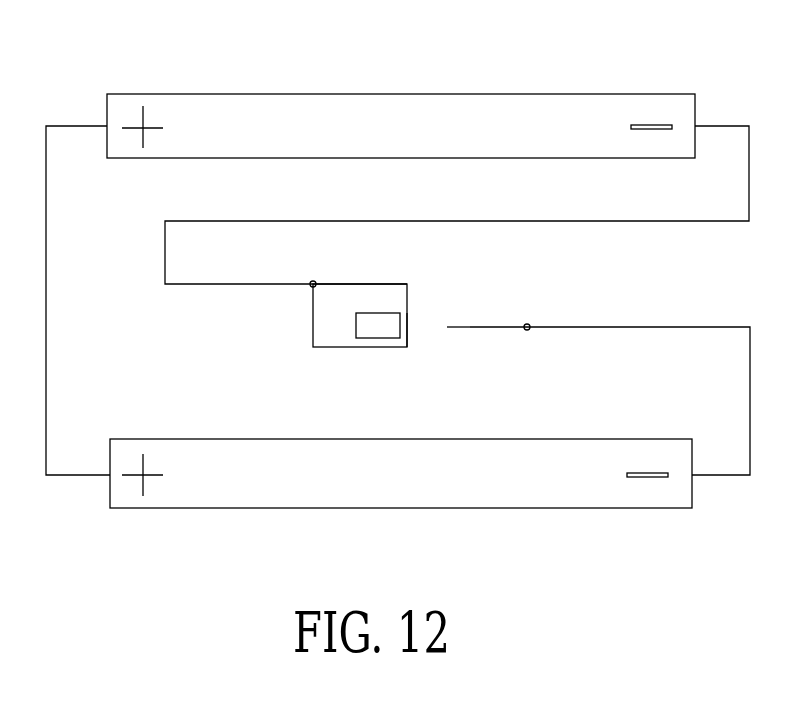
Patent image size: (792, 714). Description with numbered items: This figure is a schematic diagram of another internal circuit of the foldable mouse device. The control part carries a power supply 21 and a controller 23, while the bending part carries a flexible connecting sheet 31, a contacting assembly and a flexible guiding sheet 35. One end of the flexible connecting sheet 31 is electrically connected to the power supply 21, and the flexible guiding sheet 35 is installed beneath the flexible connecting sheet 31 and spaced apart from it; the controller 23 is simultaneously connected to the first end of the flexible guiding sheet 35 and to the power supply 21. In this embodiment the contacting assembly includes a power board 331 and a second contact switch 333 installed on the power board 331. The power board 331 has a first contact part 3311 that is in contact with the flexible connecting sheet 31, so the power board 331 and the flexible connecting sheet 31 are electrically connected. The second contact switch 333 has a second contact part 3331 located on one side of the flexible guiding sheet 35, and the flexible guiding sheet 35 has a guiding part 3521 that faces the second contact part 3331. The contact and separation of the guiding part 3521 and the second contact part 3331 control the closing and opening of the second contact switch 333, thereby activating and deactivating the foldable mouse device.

The power supply 21 is at (410, 125).
The controller 23 is at (422, 487).
The flexible connecting sheet 31 is at (357, 317).
The power board 331 is at (357, 317).
The first contact part 3311 is at (381, 283).
The second contact switch 333 is at (380, 330).
The second contact part 3331 is at (408, 334).
The flexible guiding sheet 35 is at (598, 377).
The guiding part 3521 is at (448, 326).